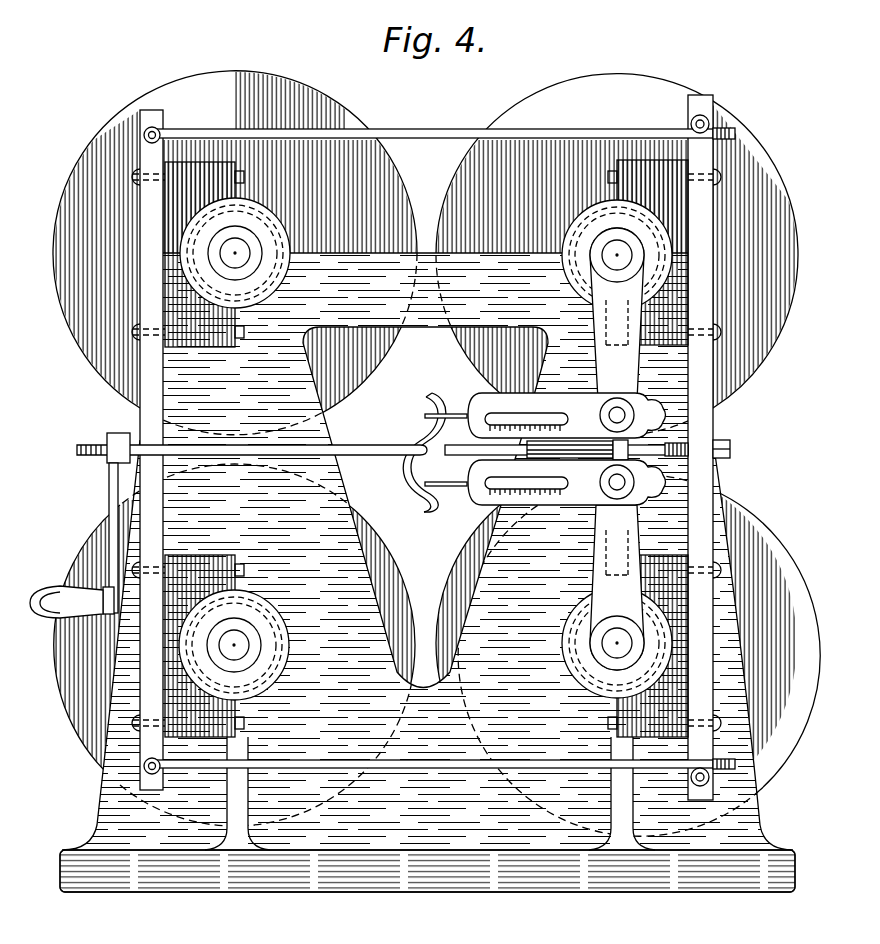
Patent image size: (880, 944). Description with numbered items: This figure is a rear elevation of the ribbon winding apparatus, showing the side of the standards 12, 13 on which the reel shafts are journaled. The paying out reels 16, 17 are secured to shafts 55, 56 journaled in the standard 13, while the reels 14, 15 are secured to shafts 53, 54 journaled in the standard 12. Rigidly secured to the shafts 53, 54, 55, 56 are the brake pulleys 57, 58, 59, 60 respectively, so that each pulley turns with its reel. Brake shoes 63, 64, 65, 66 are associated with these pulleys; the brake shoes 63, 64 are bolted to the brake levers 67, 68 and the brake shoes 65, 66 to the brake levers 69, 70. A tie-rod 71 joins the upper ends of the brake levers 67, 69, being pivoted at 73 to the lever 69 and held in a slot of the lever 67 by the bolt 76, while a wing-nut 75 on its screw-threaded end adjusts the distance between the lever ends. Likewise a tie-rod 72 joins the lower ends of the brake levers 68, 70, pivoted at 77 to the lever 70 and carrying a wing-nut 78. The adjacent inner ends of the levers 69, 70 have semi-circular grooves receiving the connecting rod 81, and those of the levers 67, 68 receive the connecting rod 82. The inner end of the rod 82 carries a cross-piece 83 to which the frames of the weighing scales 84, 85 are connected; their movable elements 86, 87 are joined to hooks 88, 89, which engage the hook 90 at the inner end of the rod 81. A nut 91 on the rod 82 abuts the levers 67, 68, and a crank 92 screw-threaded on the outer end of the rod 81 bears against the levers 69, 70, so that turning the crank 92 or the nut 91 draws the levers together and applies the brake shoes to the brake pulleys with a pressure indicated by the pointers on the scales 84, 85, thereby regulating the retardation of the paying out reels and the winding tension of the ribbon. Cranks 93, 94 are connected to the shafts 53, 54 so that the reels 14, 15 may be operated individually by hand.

The standard 12 is at (673, 516).
The standard 13 is at (185, 398).
The reel 14 is at (630, 87).
The reel 15 is at (710, 560).
The paying out reel 16 is at (110, 141).
The paying out reel 17 is at (99, 549).
The shaft 53 is at (617, 246).
The shaft 54 is at (607, 644).
The shaft 55 is at (232, 250).
The shaft 56 is at (237, 643).
The brake pulley 57 is at (590, 265).
The brake pulley 58 is at (588, 664).
The brake pulley 59 is at (188, 263).
The brake pulley 60 is at (182, 657).
The brake shoe 63 is at (647, 183).
The brake shoe 64 is at (692, 576).
The brake shoe 65 is at (196, 318).
The brake shoe 66 is at (178, 597).
The brake lever 67 is at (703, 373).
The brake lever 68 is at (737, 578).
The brake lever 69 is at (148, 250).
The brake lever 70 is at (155, 514).
The tie-rod 71 is at (440, 129).
The tie-rod 72 is at (445, 764).
The pivot 73 is at (158, 131).
The wing-nut 75 is at (720, 130).
The bolt 76 is at (700, 114).
The pivot 77 is at (141, 767).
The wing-nut 78 is at (723, 771).
The connecting rod 81 is at (353, 445).
The connecting rod 82 is at (728, 442).
The cross-piece 83 is at (526, 450).
The weighing scale 84 is at (530, 393).
The weighing scale 85 is at (485, 503).
The movable element 86 is at (456, 411).
The movable element 87 is at (460, 481).
The hook 88 is at (435, 404).
The hook 89 is at (430, 501).
The hook 90 is at (412, 459).
The nut 91 is at (712, 458).
The crank 92 is at (109, 567).
The crank 93 is at (603, 347).
The crank 94 is at (598, 563).